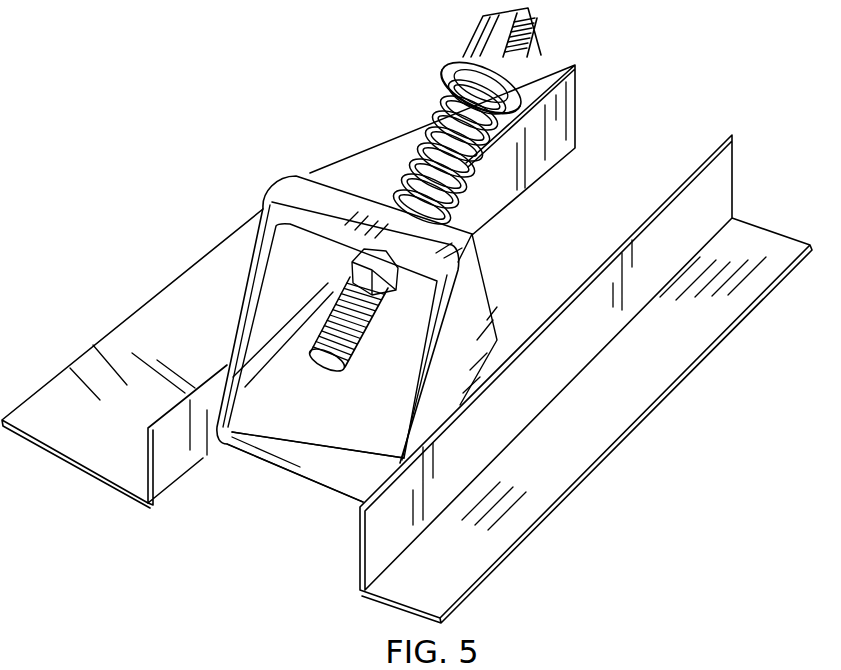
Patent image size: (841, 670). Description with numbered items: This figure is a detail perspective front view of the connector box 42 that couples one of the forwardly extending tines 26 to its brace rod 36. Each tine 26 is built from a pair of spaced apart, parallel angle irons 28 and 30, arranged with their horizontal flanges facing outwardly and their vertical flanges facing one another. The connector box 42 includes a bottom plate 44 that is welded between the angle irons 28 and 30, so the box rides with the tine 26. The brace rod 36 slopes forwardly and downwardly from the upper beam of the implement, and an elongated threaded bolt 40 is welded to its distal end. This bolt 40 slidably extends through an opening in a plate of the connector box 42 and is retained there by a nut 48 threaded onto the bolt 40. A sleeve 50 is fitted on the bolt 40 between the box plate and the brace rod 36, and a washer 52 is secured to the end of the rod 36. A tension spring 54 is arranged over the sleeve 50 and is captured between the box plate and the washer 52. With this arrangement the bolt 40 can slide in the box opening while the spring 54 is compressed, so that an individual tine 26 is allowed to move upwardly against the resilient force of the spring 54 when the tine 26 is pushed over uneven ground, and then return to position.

The tine 26 is at (118, 491).
The angle iron 28 is at (180, 296).
The angle iron 30 is at (643, 383).
The brace rod 36 is at (497, 43).
The elongated threaded bolt 40 is at (357, 330).
The connector box 42 is at (263, 208).
The bottom plate 44 is at (295, 455).
The nut 48 is at (372, 256).
The sleeve 50 is at (443, 117).
The washer 52 is at (447, 68).
The tension spring 54 is at (410, 170).